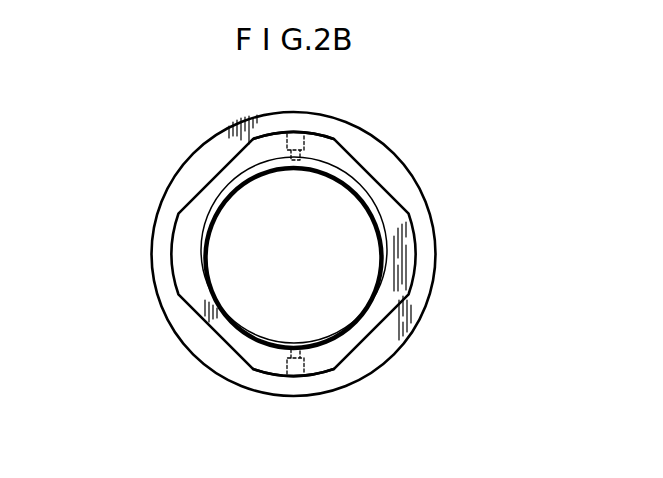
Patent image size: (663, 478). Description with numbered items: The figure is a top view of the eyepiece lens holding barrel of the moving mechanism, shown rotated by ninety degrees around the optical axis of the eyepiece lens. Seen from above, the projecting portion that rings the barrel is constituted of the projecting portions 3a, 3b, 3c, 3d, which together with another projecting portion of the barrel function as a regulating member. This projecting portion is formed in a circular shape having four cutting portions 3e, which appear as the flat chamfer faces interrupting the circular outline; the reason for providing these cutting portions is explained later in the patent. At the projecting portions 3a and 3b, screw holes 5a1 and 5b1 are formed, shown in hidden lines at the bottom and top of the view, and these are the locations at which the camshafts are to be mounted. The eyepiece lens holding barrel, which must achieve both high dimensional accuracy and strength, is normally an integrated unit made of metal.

The projecting portion 3a is at (310, 377).
The projecting portion 3b is at (313, 133).
The projecting portion 3c is at (166, 250).
The projecting portion 3d is at (415, 257).
The cutting portion 3e is at (217, 173).
The screw hole 5a1 is at (288, 370).
The screw hole 5b1 is at (287, 140).